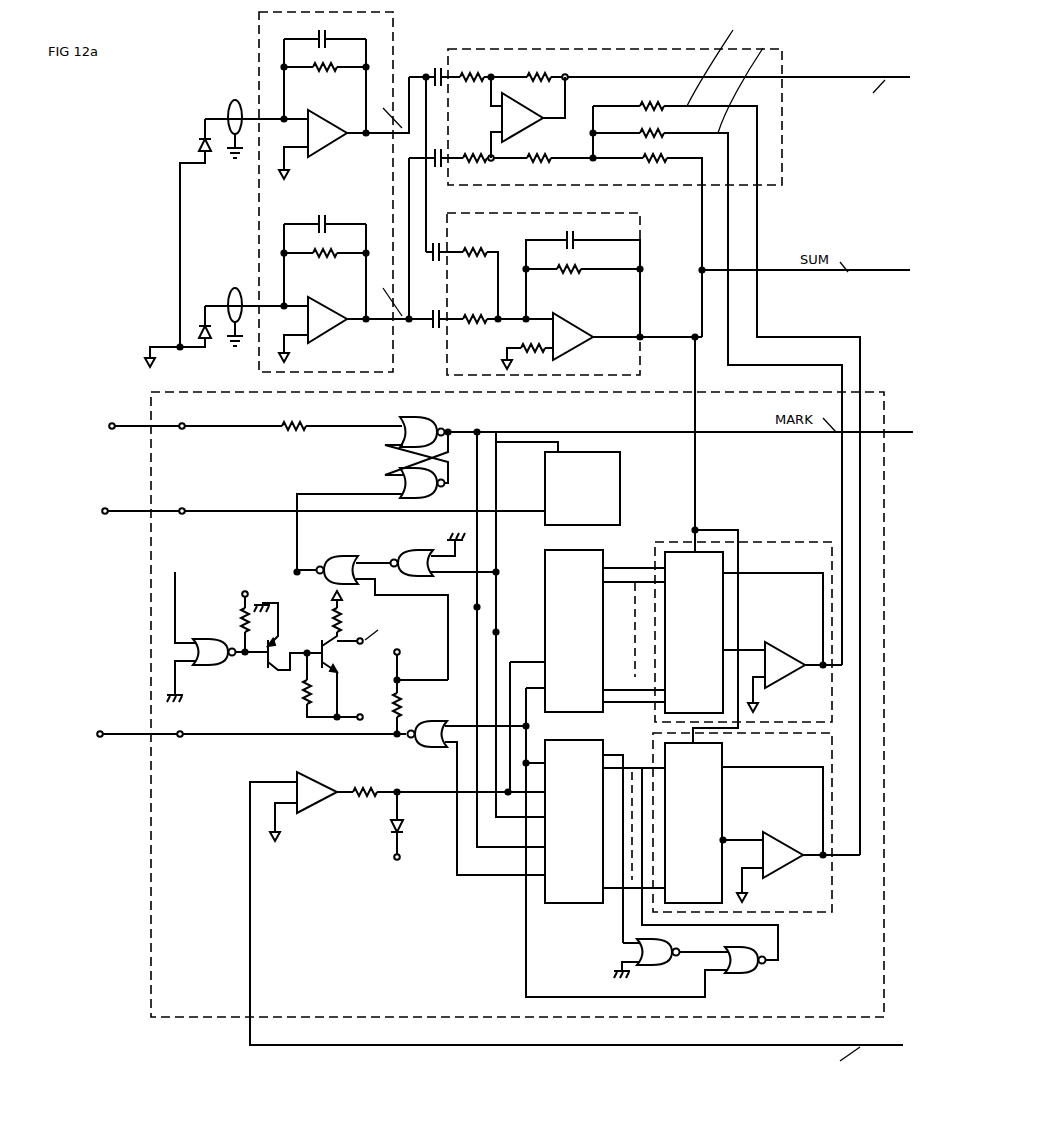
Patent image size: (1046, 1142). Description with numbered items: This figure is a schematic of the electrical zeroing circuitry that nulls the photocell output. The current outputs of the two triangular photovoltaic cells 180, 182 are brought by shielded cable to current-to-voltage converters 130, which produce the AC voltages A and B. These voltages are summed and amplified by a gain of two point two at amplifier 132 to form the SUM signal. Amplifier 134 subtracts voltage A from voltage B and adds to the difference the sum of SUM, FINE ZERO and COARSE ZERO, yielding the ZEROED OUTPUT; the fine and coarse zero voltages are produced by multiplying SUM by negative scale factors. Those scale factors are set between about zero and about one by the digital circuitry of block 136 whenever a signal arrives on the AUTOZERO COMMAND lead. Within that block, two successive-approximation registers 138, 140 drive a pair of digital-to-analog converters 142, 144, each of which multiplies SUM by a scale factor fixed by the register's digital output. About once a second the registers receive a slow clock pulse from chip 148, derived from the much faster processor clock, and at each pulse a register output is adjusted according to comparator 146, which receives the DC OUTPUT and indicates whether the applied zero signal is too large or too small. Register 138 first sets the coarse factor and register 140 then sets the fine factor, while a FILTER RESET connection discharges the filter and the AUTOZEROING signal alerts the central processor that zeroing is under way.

The current-to-voltage converters 130 is at (257, 232).
The amplifier 132 is at (642, 250).
The amplifier 134 is at (782, 140).
The digital circuitry block 136 is at (151, 920).
The successive-approximation register 138 is at (555, 586).
The successive-approximation register 140 is at (548, 885).
The digital-to-analog converter 142 is at (789, 537).
The digital-to-analog converter 144 is at (790, 912).
The comparator 146 is at (307, 666).
The clock chip 148 is at (620, 492).
The photovoltaic cell 180 is at (200, 145).
The photovoltaic cell 182 is at (200, 326).